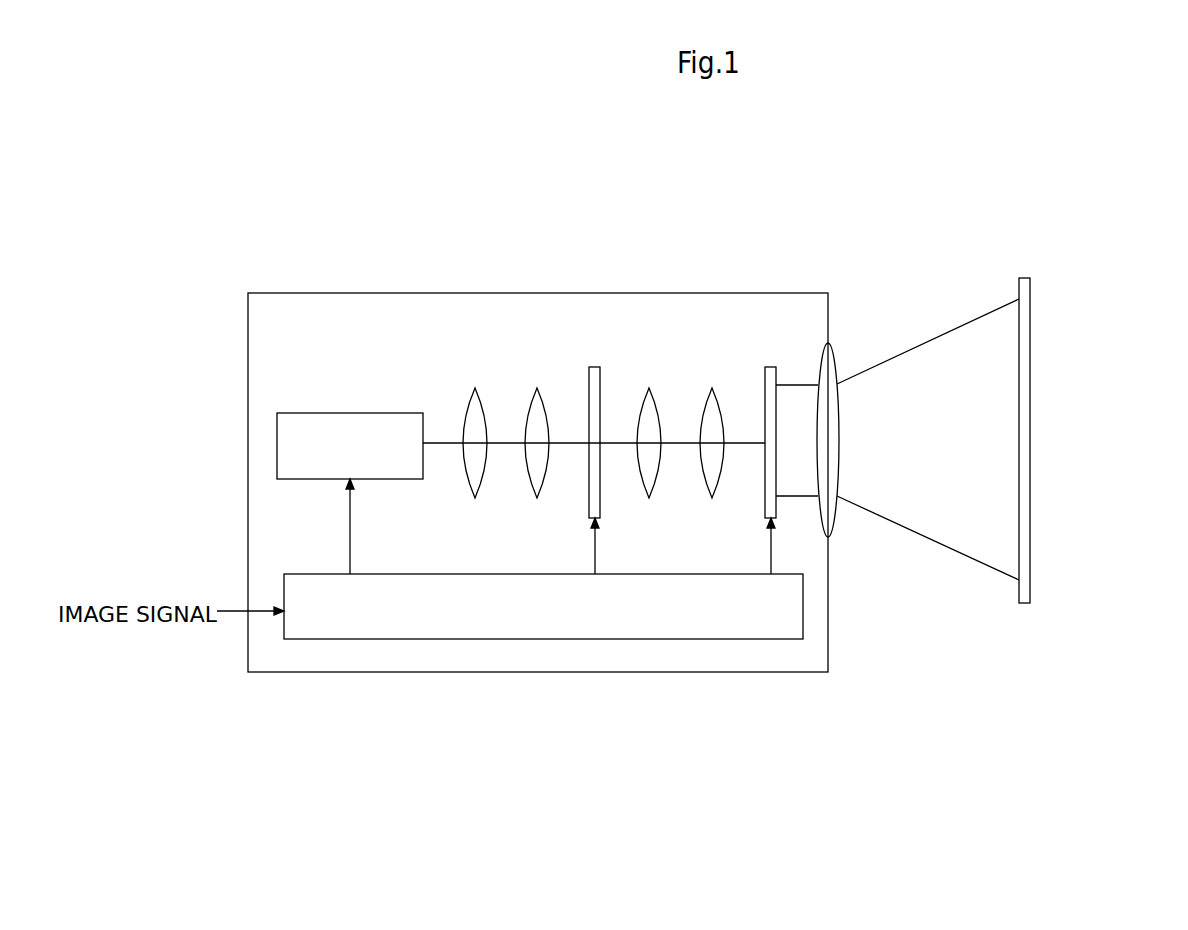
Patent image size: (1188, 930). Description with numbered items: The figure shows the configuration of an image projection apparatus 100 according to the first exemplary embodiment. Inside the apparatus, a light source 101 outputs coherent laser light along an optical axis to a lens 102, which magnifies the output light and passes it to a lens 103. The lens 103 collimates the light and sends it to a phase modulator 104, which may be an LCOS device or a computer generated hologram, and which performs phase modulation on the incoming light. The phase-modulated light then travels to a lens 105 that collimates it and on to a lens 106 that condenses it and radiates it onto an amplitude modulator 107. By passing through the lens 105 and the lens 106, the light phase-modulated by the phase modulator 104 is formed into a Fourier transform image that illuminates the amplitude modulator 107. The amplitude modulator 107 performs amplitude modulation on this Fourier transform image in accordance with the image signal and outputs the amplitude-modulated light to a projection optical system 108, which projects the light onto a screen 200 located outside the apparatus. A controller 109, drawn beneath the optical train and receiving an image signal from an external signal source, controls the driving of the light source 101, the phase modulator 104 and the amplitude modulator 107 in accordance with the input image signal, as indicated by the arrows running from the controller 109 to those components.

The image projection apparatus 100 is at (630, 293).
The light source 101 is at (372, 413).
The lens 102 is at (473, 389).
The lens 103 is at (535, 389).
The phase modulator 104 is at (594, 367).
The lens 105 is at (649, 388).
The lens 106 is at (712, 388).
The amplitude modulator 107 is at (770, 367).
The projection optical system 108 is at (824, 346).
The controller 109 is at (667, 574).
The screen 200 is at (1021, 278).